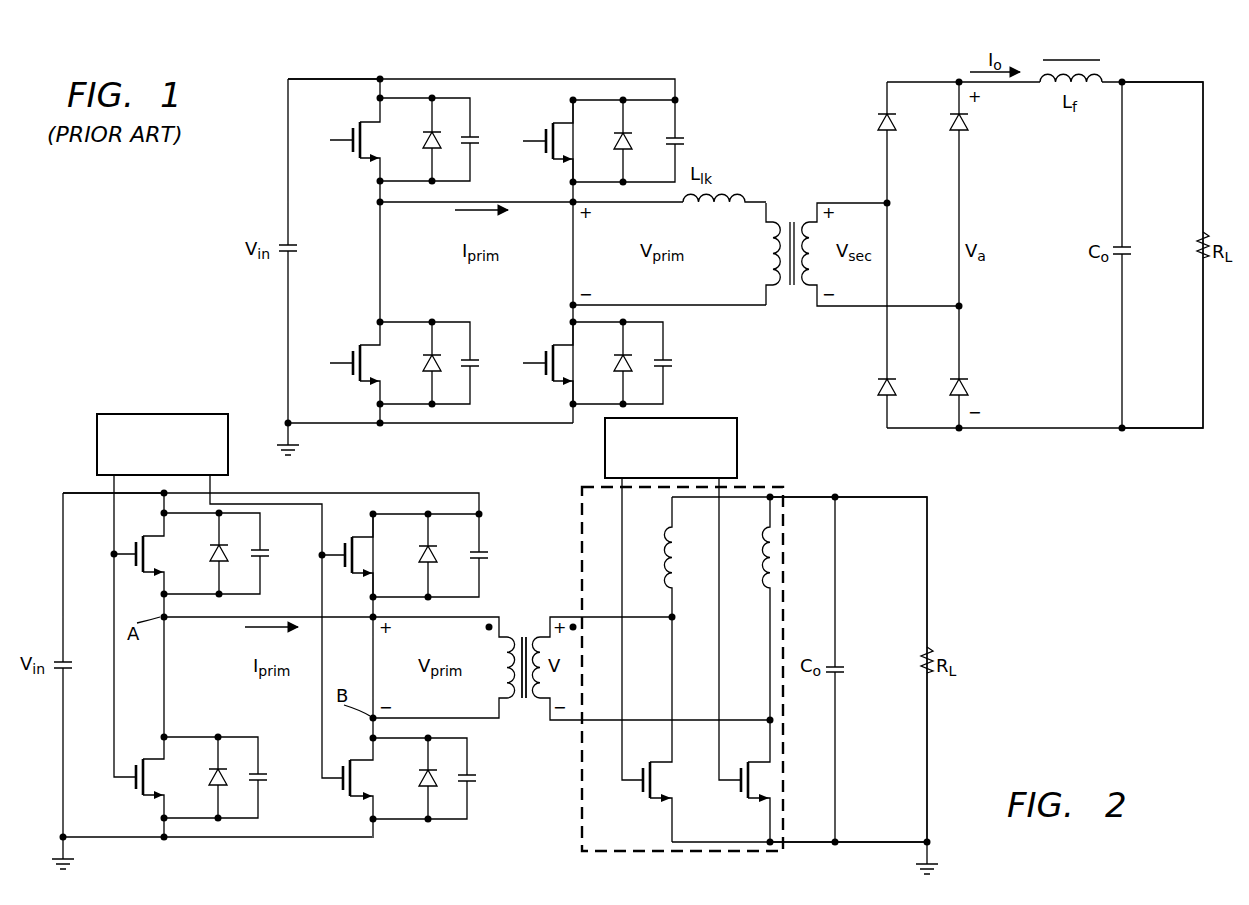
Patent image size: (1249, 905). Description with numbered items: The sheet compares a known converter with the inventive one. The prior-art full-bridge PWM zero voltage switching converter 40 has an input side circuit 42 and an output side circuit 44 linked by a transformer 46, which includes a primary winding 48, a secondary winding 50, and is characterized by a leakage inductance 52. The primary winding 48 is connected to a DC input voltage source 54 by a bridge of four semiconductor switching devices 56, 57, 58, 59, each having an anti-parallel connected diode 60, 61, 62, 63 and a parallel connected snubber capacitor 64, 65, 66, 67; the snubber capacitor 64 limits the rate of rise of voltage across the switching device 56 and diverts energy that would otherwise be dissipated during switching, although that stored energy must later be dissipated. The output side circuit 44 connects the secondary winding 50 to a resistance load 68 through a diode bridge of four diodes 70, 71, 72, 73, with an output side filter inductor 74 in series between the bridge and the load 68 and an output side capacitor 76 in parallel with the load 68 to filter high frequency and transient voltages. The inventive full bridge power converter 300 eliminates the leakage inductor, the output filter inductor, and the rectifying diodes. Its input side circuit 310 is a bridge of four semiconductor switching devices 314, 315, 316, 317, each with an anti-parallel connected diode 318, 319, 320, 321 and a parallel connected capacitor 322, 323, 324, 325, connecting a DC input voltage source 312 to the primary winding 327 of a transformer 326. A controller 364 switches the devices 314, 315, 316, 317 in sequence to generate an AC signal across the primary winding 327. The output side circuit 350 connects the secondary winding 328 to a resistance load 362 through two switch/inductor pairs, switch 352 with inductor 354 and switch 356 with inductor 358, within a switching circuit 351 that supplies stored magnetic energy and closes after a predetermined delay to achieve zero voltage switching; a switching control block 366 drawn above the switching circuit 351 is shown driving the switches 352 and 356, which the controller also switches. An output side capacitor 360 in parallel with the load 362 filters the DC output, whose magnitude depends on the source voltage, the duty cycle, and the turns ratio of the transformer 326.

In FIG. 1, the zero voltage switching converter 40 is at (168, 205).
In FIG. 1, the input side circuit 42 is at (303, 78).
In FIG. 1, the output side circuit 44 is at (1192, 82).
In FIG. 1, the transformer 46 is at (794, 255).
In FIG. 1, the primary winding 48 is at (771, 222).
In FIG. 1, the secondary winding 50 is at (808, 290).
In FIG. 1, the leakage inductance 52 is at (727, 192).
In FIG. 1, the DC input voltage source 54 is at (300, 250).
In FIG. 1, the converter semiconductor switch 56 is at (350, 134).
In FIG. 1, the converter semiconductor switch 57 is at (350, 372).
In FIG. 1, the converter semiconductor switch 58 is at (543, 134).
In FIG. 1, the converter semiconductor switch 59 is at (543, 357).
In FIG. 1, the anti-parallel connected diode 60 is at (425, 138).
In FIG. 1, the anti-parallel connected diode 61 is at (425, 362).
In FIG. 1, the anti-parallel connected diode 62 is at (616, 138).
In FIG. 1, the anti-parallel connected diode 63 is at (616, 362).
In FIG. 1, the snubber capacitor 64 is at (481, 141).
In FIG. 1, the snubber capacitor 65 is at (481, 366).
In FIG. 1, the snubber capacitor 66 is at (686, 140).
In FIG. 1, the snubber capacitor 67 is at (674, 366).
In FIG. 1, the resistance load 68 is at (1196, 247).
In FIG. 1, the diode 70 is at (880, 120).
In FIG. 1, the diode 71 is at (880, 386).
In FIG. 1, the diode 72 is at (952, 120).
In FIG. 1, the diode 73 is at (966, 386).
In FIG. 1, the output side filter inductor 74 is at (1105, 80).
In FIG. 1, the output side capacitor 76 is at (1132, 257).
In FIG. 2, the full bridge power converter 300 is at (1020, 740).
In FIG. 2, the input side circuit 310 is at (76, 493).
In FIG. 2, the DC input voltage source 312 is at (75, 660).
In FIG. 2, the semiconductor switching device 314 is at (136, 575).
In FIG. 2, the semiconductor switching device 315 is at (133, 785).
In FIG. 2, the semiconductor switching device 316 is at (343, 572).
In FIG. 2, the semiconductor switching device 317 is at (340, 790).
In FIG. 2, the anti-parallel connected diode 318 is at (212, 553).
In FIG. 2, the anti-parallel connected diode 319 is at (211, 777).
In FIG. 2, the anti-parallel connected diode 320 is at (421, 553).
In FIG. 2, the anti-parallel connected diode 321 is at (421, 777).
In FIG. 2, the parallel connected capacitor 322 is at (271, 556).
In FIG. 2, the parallel connected capacitor 323 is at (269, 778).
In FIG. 2, the parallel connected capacitor 324 is at (490, 555).
In FIG. 2, the parallel connected capacitor 325 is at (478, 780).
In FIG. 2, the transformer 326 is at (536, 668).
In FIG. 2, the primary winding 327 is at (511, 640).
In FIG. 2, the secondary winding 328 is at (540, 704).
In FIG. 2, the output side circuit 350 is at (908, 497).
In FIG. 2, the switching circuit 351 is at (665, 634).
In FIG. 2, the output side switching device 352 is at (640, 790).
In FIG. 2, the inductor 354 is at (657, 560).
In FIG. 2, the output side switching device 356 is at (738, 790).
In FIG. 2, the inductor 358 is at (757, 578).
In FIG. 2, the output side capacitor 360 is at (846, 672).
In FIG. 2, the resistance load 362 is at (920, 652).
In FIG. 2, the controller 364 is at (165, 414).
In FIG. 2, the switching control circuit 366 is at (740, 452).